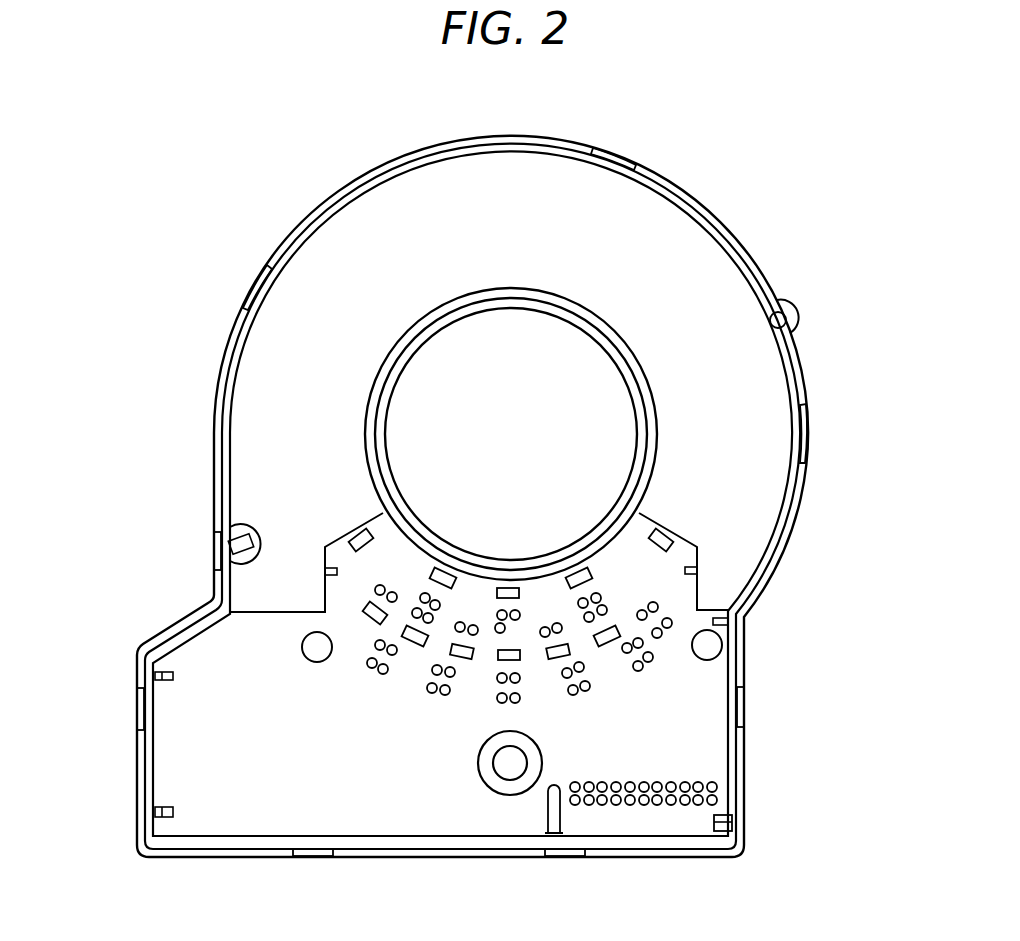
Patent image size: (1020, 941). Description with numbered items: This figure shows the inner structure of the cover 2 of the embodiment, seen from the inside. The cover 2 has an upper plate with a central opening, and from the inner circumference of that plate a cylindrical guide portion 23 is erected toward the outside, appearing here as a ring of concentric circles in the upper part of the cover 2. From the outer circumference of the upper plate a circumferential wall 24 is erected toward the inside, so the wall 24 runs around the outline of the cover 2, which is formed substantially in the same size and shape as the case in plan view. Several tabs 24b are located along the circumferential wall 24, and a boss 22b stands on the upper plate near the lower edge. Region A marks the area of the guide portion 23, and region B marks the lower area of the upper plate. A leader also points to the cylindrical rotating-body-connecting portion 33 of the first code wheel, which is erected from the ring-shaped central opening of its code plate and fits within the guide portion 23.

The cover 2 is at (803, 373).
The circumferential wall 24 is at (737, 237).
The engaging claws / tabs 24b is at (617, 153).
The cylindrical guide portion 23 is at (378, 378).
The cylindrical rotating-body-connecting portion 33 is at (440, 323).
The cylindrical boss 22b is at (507, 768).
The ring portion A is at (533, 278).
The circuit board portion B is at (351, 493).